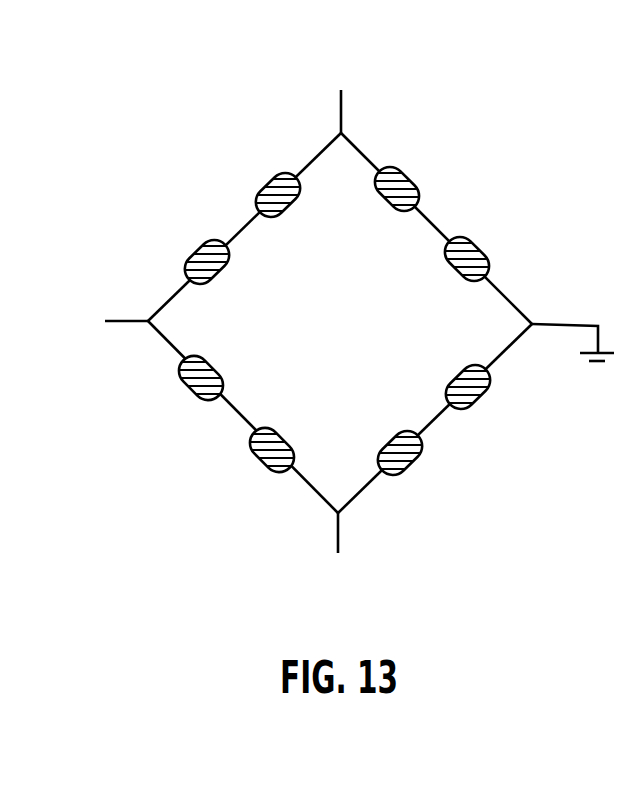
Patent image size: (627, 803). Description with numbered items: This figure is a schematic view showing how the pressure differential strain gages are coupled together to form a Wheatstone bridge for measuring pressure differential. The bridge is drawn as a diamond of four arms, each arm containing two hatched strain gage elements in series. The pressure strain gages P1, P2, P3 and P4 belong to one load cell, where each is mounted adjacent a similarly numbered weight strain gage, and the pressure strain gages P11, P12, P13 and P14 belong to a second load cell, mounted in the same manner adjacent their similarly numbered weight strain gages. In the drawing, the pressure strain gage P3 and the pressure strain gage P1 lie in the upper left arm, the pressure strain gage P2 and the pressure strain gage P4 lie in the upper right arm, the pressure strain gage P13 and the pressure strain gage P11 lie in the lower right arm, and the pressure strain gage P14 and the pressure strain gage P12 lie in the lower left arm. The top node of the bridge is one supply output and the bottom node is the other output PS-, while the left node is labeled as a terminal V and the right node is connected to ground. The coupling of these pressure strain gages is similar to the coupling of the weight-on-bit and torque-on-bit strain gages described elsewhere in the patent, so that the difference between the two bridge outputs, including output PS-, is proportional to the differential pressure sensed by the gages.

The pressure strain gage P1 is at (278, 195).
The pressure strain gage P2 is at (397, 189).
The pressure strain gage P3 is at (207, 262).
The pressure strain gage P4 is at (467, 259).
The pressure strain gage P11 is at (400, 453).
The pressure strain gage P12 is at (272, 450).
The pressure strain gage P13 is at (468, 387).
The pressure strain gage P14 is at (201, 378).
The output PS- is at (360, 543).
The output voltage terminal V is at (126, 305).